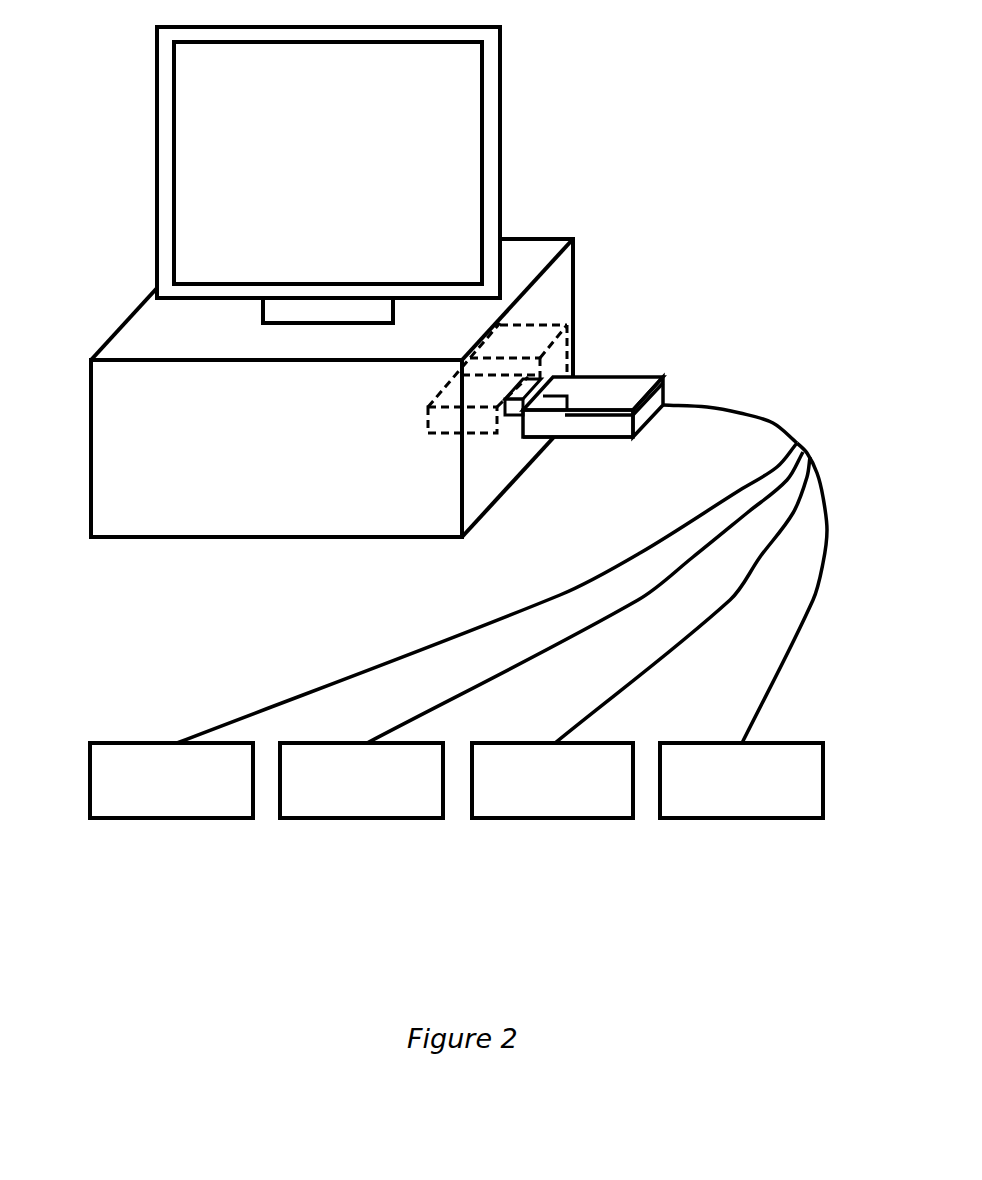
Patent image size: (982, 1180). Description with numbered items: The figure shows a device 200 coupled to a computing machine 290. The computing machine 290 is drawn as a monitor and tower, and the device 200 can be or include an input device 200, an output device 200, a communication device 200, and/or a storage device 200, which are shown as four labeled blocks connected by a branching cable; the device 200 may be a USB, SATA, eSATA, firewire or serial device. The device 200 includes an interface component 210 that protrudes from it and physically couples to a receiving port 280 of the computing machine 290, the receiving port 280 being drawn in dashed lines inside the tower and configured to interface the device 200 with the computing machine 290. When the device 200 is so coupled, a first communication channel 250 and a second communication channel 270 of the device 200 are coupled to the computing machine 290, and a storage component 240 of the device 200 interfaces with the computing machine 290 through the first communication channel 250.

The device 200 is at (758, 805).
The interface component 210 is at (522, 388).
The storage component 240 is at (637, 393).
The first communication channel 250 is at (563, 388).
The second communication channel 270 is at (560, 425).
The receiving port 280 is at (427, 423).
The computing machine 290 is at (133, 392).